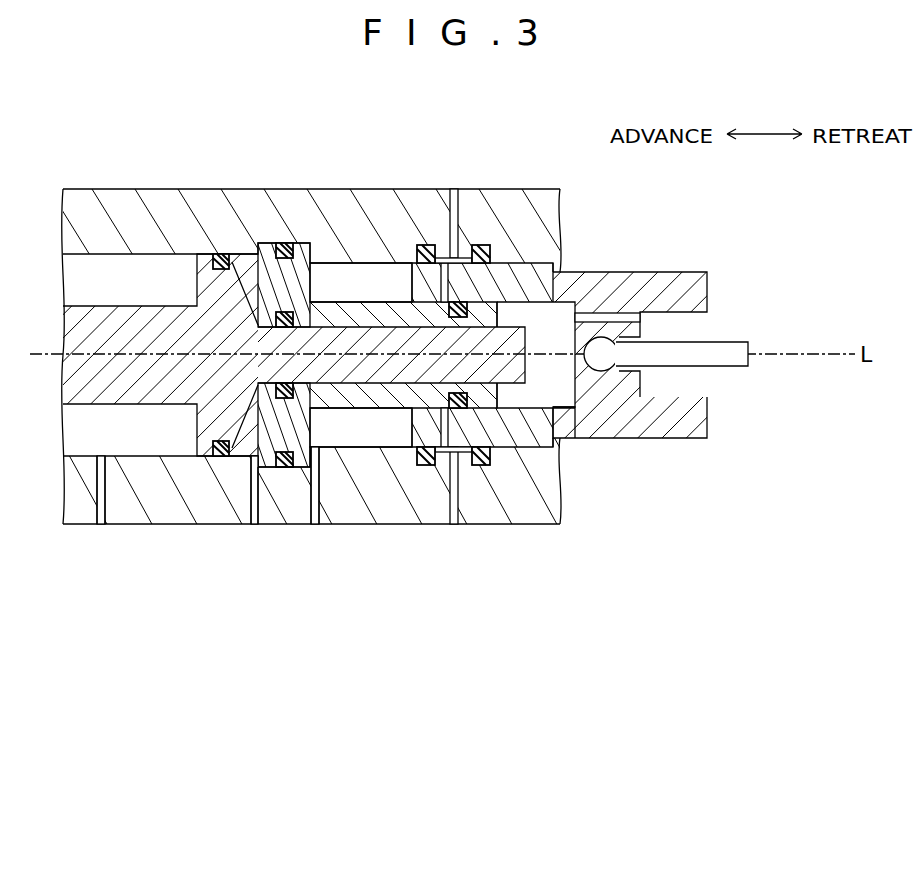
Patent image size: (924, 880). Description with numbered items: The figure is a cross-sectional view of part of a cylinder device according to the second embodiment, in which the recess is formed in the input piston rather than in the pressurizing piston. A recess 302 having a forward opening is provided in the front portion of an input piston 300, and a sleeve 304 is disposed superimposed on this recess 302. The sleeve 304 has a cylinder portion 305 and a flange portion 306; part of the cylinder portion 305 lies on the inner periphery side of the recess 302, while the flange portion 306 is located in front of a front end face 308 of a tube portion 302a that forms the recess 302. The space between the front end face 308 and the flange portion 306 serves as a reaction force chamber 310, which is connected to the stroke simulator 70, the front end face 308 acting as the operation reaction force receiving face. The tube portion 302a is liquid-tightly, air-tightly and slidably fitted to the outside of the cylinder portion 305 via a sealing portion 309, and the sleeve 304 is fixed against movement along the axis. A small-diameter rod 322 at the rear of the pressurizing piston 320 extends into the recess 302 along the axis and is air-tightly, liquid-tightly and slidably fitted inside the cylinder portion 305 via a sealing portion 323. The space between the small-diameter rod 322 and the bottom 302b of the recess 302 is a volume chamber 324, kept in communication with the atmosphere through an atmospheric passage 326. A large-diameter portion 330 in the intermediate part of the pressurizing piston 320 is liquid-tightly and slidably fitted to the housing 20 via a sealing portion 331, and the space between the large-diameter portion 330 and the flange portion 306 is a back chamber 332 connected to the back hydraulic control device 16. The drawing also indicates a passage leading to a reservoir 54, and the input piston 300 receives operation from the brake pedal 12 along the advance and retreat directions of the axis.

The housing 20 is at (103, 189).
The pressurizing piston 320 is at (171, 420).
The sealing portion 331 is at (223, 254).
The large-diameter portion 330 is at (222, 456).
The flange portion 306 is at (267, 258).
The sealing portion 323 is at (294, 312).
The back chamber 332 is at (285, 468).
The reaction force chamber 310 is at (327, 372).
The sleeve 304 is at (364, 420).
The small-diameter rod 322 is at (350, 445).
The cylinder portion 305 is at (380, 303).
The front end face 308 is at (417, 248).
The sealing portion 309 is at (460, 302).
The recess 302 is at (556, 378).
The atmospheric passage 326 is at (633, 313).
The volume chamber 324 is at (560, 440).
The tube portion 302a is at (563, 395).
The bottom 302b is at (556, 325).
The input piston 300 is at (624, 242).
The brake pedal 12 is at (793, 330).
The back hydraulic control device 16 is at (252, 524).
The stroke simulator 70 is at (317, 524).
The reservoir 54 is at (100, 524).